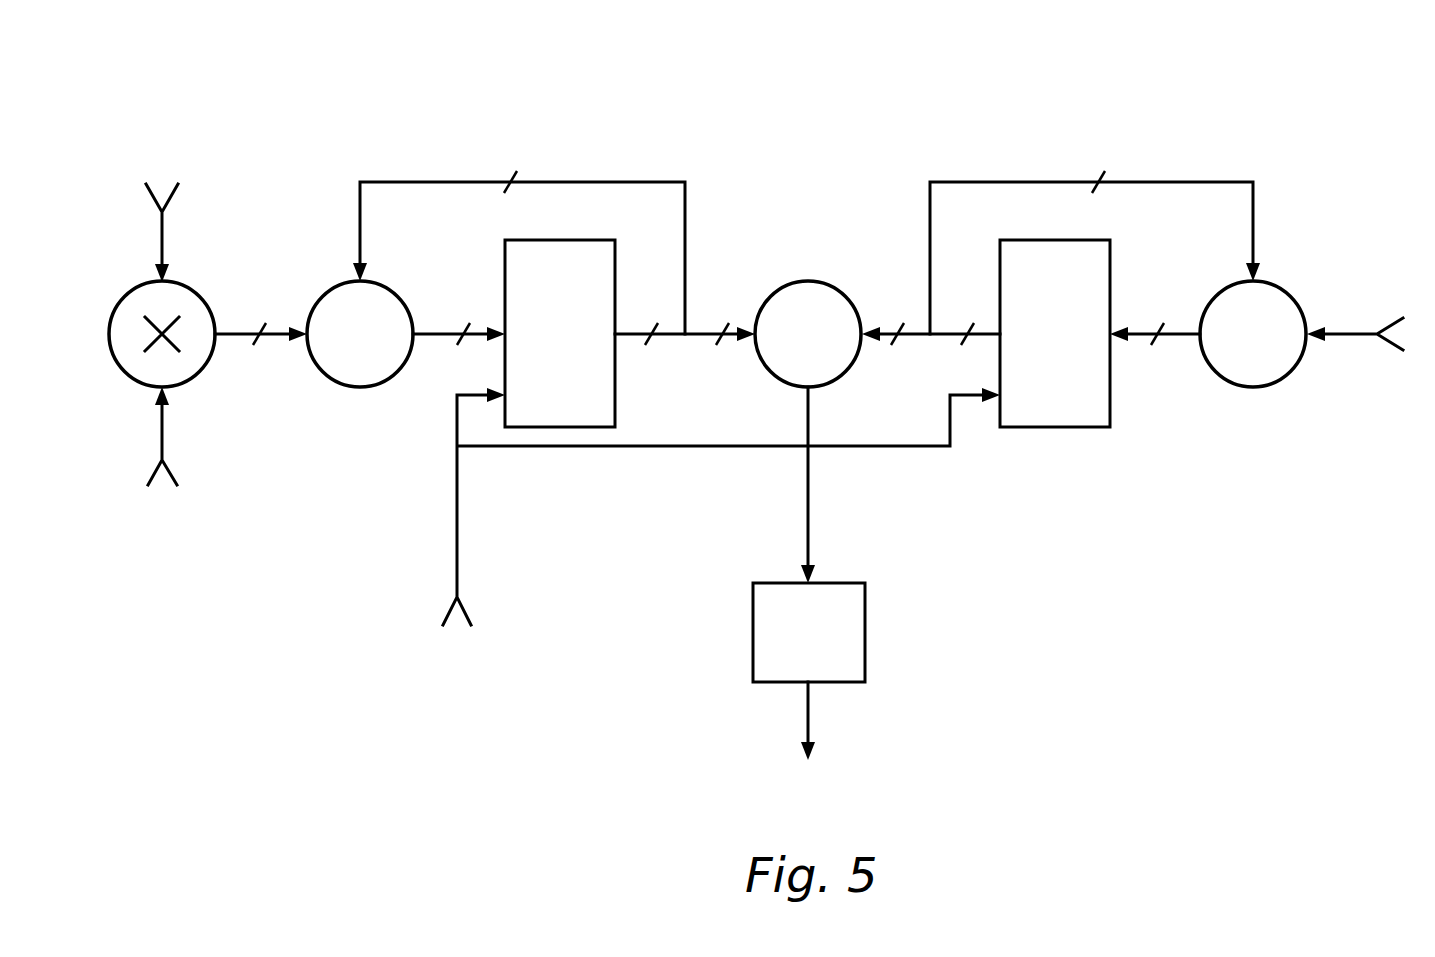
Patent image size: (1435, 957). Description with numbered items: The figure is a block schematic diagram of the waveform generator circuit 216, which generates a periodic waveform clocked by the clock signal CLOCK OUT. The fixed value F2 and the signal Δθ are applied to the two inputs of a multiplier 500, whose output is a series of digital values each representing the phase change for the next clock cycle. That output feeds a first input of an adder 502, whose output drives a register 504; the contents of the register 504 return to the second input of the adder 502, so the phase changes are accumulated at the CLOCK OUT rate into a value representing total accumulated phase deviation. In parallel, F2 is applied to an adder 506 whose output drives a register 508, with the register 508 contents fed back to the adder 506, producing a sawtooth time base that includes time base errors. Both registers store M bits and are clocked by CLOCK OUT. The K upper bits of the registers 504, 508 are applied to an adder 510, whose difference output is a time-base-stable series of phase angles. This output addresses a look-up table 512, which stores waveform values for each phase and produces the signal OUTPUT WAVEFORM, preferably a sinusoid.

The waveform generator circuit 216 is at (985, 114).
The multiplier 500 is at (203, 298).
The adder 502 is at (401, 298).
The register 504 is at (563, 333).
The adder 506 is at (1283, 375).
The register 508 is at (1055, 333).
The adder 510 is at (812, 280).
The look-up table 512 is at (811, 632).